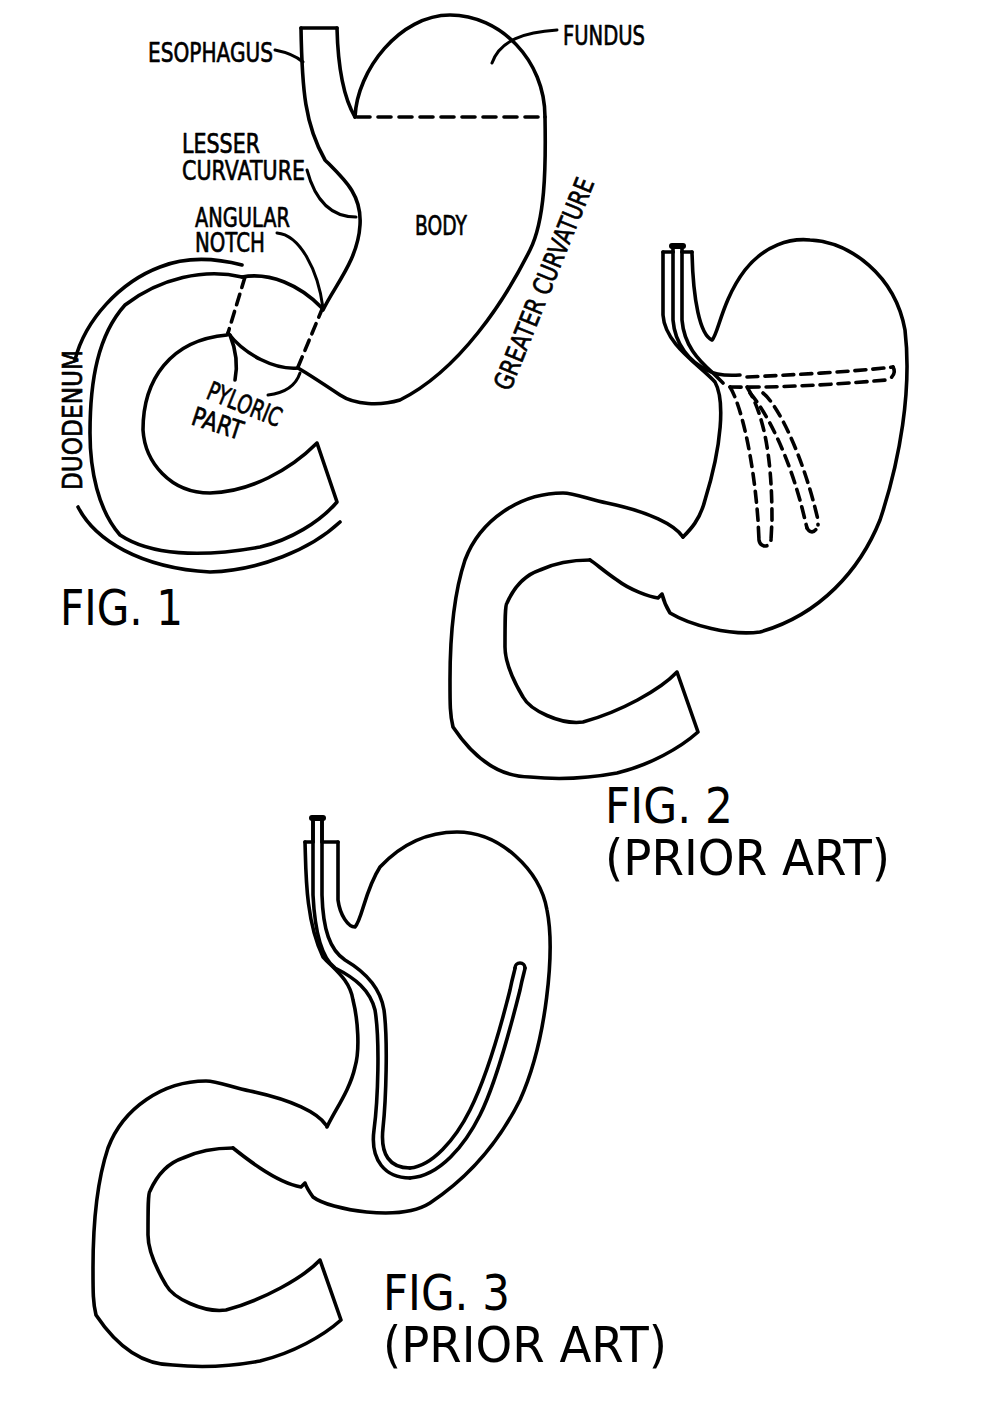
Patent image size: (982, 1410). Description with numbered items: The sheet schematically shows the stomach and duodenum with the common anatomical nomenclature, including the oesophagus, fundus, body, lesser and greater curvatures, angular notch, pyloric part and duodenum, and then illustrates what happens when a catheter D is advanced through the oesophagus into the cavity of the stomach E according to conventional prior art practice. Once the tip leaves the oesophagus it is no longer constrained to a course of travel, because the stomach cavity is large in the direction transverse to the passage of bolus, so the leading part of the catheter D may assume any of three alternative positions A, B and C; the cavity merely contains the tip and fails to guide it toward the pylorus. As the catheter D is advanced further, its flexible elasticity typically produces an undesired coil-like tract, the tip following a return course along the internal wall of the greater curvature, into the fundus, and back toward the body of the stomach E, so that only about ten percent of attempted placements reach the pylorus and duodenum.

In FIG. 2, the first possible position A is at (773, 520).
In FIG. 2, the second possible position B is at (807, 480).
In FIG. 2, the third possible position C is at (832, 377).
In FIG. 2, the catheter D is at (681, 248).
In FIG. 3, the catheter D is at (320, 823).
In FIG. 3, the stomach E is at (493, 1078).
In FIG. 2, the fundus region of stomach F is at (813, 318).